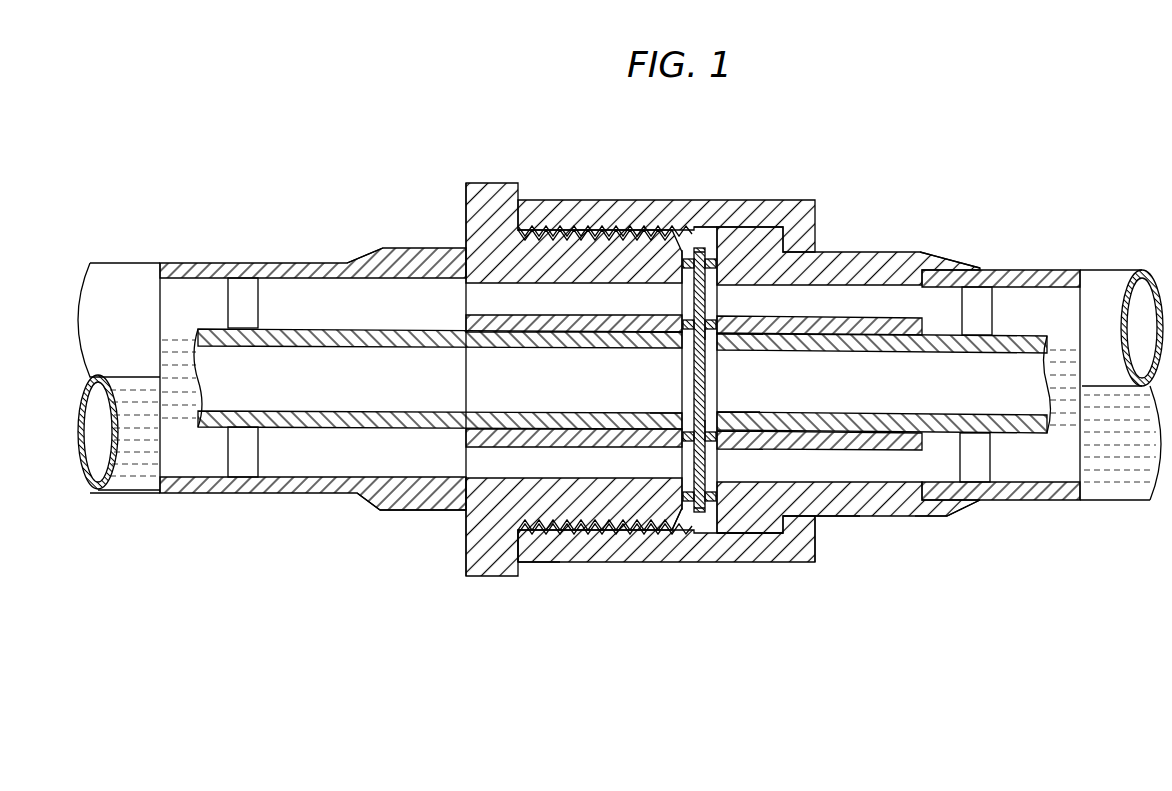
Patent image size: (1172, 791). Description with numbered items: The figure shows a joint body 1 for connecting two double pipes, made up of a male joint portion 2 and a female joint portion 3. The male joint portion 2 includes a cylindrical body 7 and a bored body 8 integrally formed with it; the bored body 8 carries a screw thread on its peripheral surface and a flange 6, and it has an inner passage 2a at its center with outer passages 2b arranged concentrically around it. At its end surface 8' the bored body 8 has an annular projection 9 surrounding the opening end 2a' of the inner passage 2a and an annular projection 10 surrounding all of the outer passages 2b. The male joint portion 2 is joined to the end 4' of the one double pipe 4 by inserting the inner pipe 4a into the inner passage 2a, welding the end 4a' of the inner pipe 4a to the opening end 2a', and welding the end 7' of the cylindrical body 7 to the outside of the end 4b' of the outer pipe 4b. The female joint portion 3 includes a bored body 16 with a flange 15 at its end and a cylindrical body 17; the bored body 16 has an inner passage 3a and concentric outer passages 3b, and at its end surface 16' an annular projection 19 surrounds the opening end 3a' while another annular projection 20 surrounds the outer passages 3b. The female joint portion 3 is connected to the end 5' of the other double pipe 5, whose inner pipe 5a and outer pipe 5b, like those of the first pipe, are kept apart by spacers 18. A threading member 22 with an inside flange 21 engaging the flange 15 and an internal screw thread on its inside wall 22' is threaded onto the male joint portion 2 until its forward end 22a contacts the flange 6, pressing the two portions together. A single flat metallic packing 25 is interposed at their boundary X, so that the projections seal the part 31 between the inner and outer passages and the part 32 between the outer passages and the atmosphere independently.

The joint body 1 is at (661, 195).
The male joint portion 2 is at (465, 244).
The inner passage 2a is at (573, 382).
The opening end of the inner passage 2a' is at (661, 381).
The outer passages 2b is at (600, 297).
The female joint portion 3 is at (862, 253).
The inner passage 3a is at (877, 384).
The opening end of the inner passage 3a' is at (754, 393).
The outer passages 3b is at (855, 298).
The one double pipe 4 is at (169, 341).
The inner pipe 4a is at (438, 359).
The end of the inner pipe 4a' is at (641, 357).
The outer pipe 4b is at (313, 360).
The end of the outer pipe 4b' is at (443, 477).
The end of the one double pipe 4' is at (361, 237).
The other double pipe 5 is at (1106, 352).
The inner pipe 5a is at (1021, 334).
The outer pipe 5b is at (1019, 270).
The end of the other double pipe 5' is at (956, 385).
The flange 6 is at (472, 556).
The cylindrical body 7 is at (402, 524).
The end of the cylindrical body 7' is at (368, 518).
The bored body 8 is at (605, 419).
The end surface of the bored body 8' is at (653, 560).
The annular projection 9 is at (686, 322).
The annular projection 10 is at (687, 264).
The flange 15 is at (768, 532).
The bored body 16 is at (838, 540).
The end surface of the bored body 16' is at (750, 574).
The cylindrical body 17 is at (936, 516).
The spacers 18 is at (233, 290).
The annular projection 19 is at (716, 322).
The annular projection 20 is at (711, 264).
The inside flange 21 is at (816, 556).
The threading member 22 is at (605, 581).
The inner wall of coupling nut 22' is at (544, 586).
The forward end of the threading member 22a is at (527, 565).
The flat packing 25 is at (719, 247).
The sealed part 31 is at (708, 332).
The sealed part 32 is at (740, 243).
The boundary X is at (694, 247).